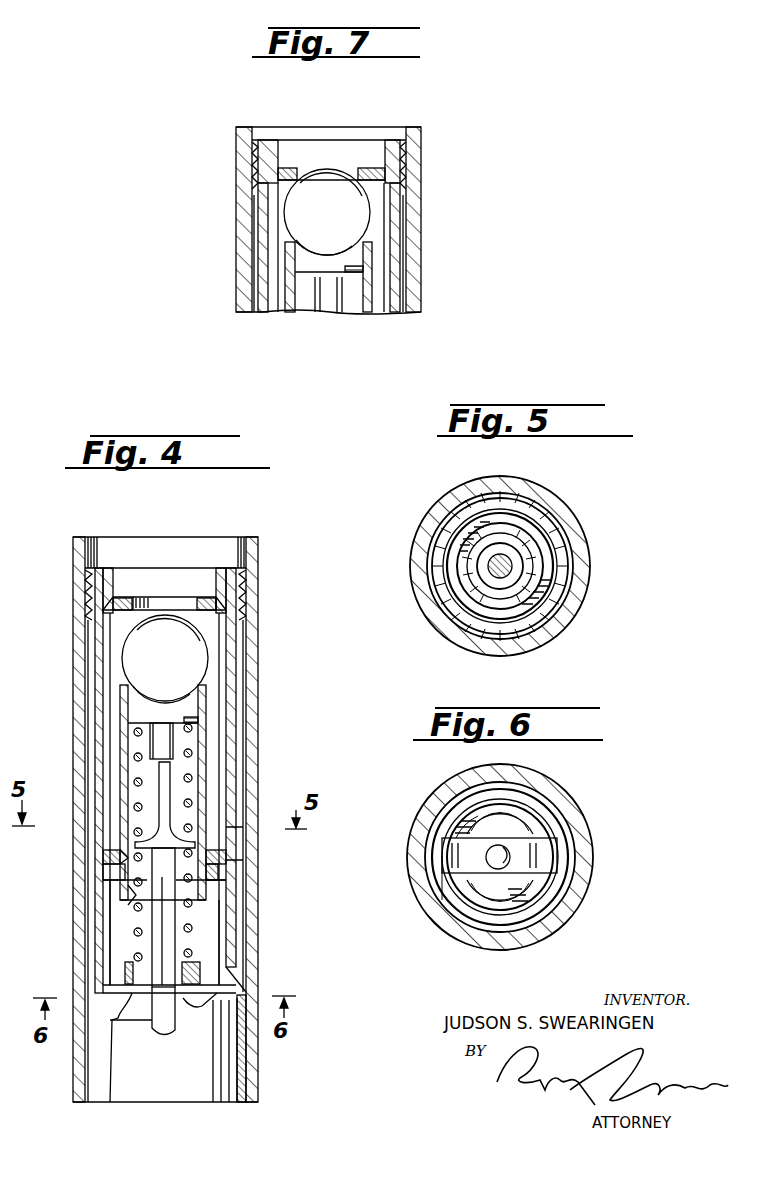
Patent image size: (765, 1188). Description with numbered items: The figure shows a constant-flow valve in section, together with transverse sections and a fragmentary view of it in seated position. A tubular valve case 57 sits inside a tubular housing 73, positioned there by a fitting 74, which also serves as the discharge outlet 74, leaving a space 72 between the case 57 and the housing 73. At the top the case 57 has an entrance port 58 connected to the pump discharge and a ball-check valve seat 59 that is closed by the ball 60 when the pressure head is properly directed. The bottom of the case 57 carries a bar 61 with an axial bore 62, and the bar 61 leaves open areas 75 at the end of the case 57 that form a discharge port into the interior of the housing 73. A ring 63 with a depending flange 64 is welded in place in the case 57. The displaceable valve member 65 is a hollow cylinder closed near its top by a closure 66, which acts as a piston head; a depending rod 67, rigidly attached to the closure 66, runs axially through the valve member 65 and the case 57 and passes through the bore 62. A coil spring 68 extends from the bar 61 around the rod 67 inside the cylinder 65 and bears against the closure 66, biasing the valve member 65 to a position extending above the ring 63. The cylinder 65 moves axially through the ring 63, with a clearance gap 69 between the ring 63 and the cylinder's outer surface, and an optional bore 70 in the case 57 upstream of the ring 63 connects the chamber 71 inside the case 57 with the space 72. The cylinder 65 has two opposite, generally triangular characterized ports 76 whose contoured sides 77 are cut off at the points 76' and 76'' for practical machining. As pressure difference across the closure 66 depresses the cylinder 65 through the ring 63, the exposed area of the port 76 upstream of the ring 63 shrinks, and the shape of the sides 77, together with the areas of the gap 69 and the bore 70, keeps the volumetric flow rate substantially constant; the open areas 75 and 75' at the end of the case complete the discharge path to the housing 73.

In FIG. 7, the tubular valve case 57 is at (393, 230).
In FIG. 4, the tubular valve case 57 is at (233, 655).
In FIG. 6, the tubular valve case 57 is at (535, 805).
In FIG. 4, the entrance port 58 is at (166, 592).
In FIG. 4, the ball-check valve seat 59 is at (120, 592).
In FIG. 7, the ball 60 is at (330, 223).
In FIG. 4, the ball 60 is at (170, 669).
In FIG. 6, the bar 61 is at (473, 858).
In FIG. 6, the axial bore 62 is at (520, 852).
In FIG. 4, the ring 63 is at (110, 872).
In FIG. 6, the ring 63 is at (495, 900).
In FIG. 4, the depending flange 64 is at (107, 883).
In FIG. 6, the depending flange 64 is at (557, 838).
In FIG. 7, the displaceable valve member 65 is at (369, 290).
In FIG. 4, the displaceable valve member 65 is at (206, 790).
In FIG. 7, the closure 66 is at (358, 268).
In FIG. 4, the closure 66 is at (206, 712).
In FIG. 4, the depending rod 67 is at (176, 738).
In FIG. 5, the depending rod 67 is at (512, 565).
In FIG. 6, the depending rod 67 is at (510, 860).
In FIG. 4, the coil spring 68 is at (200, 942).
In FIG. 4, the gap 69 is at (208, 862).
In FIG. 6, the gap 69 is at (525, 880).
In FIG. 4, the bore 70 is at (232, 834).
In FIG. 5, the bore 70 is at (548, 562).
In FIG. 4, the chamber 71 is at (218, 766).
In FIG. 4, the space 72 is at (237, 907).
In FIG. 7, the tubular housing 73 is at (420, 266).
In FIG. 4, the tubular housing 73 is at (257, 546).
In FIG. 4, the fitting 74 is at (236, 578).
In FIG. 6, the open areas 75 is at (561, 912).
In FIG. 6, the slot 75' is at (430, 808).
In FIG. 4, the characterized ports 76 is at (80, 855).
In FIG. 5, the characterized ports 76 is at (526, 580).
In FIG. 4, the cut-off point 76' is at (99, 747).
In FIG. 4, the cut-off point 76'' is at (128, 908).
In FIG. 4, the sides 77 is at (166, 842).
In FIG. 5, the sides 77 is at (495, 521).